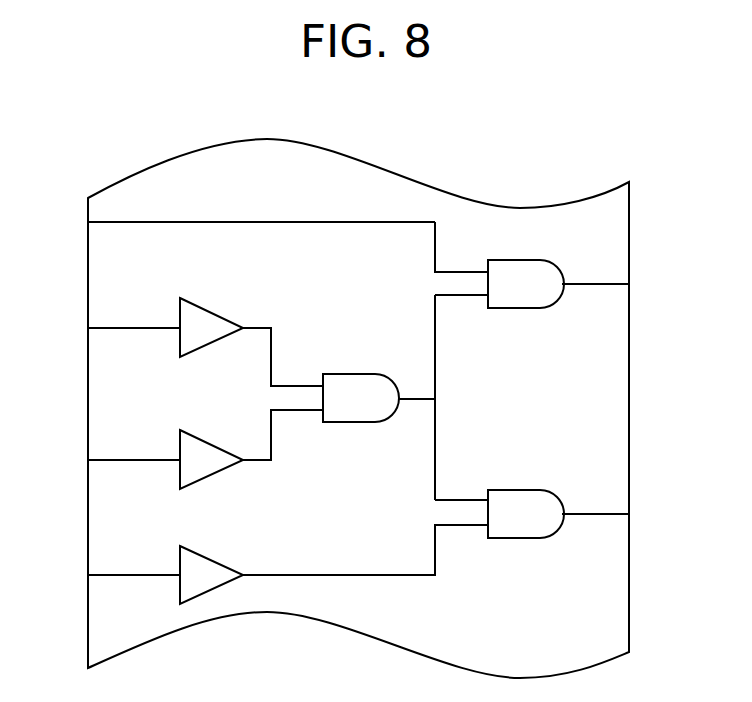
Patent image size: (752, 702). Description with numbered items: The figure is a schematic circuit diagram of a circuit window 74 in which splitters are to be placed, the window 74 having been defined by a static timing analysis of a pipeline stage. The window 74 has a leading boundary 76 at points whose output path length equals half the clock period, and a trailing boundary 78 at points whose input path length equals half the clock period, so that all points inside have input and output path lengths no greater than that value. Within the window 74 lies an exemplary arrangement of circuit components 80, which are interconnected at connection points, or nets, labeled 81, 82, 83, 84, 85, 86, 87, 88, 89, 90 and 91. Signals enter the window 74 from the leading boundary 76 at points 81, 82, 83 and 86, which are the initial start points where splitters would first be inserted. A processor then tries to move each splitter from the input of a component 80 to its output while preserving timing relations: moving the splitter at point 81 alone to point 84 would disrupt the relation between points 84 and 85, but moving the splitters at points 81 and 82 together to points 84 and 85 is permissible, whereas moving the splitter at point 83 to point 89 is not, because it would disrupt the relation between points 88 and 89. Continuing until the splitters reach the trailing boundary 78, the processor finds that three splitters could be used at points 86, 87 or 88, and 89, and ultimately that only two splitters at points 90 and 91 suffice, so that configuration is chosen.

The window 74 is at (500, 207).
The leading boundary 76 is at (88, 390).
The trailing boundary 78 is at (629, 390).
The circuit components 80 is at (214, 359).
The connection point 81 is at (134, 316).
The connection point 82 is at (134, 449).
The connection point 83 is at (134, 560).
The connection point 84 is at (283, 357).
The connection point 85 is at (283, 435).
The connection point 86 is at (461, 247).
The connection point 87 is at (443, 397).
The connection point 88 is at (461, 488).
The connection point 89 is at (365, 550).
The connection point 90 is at (595, 270).
The connection point 91 is at (595, 502).